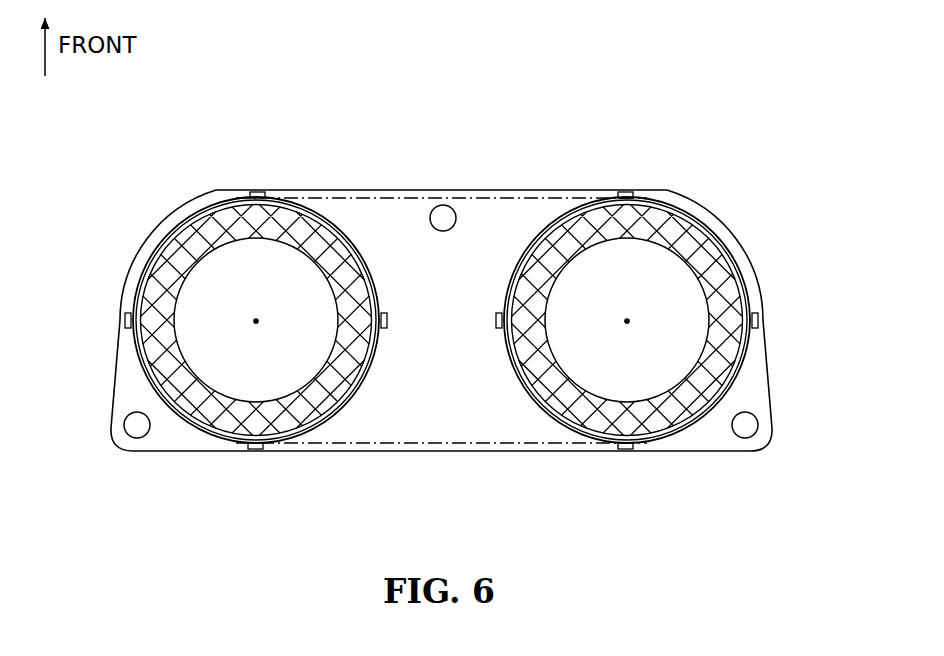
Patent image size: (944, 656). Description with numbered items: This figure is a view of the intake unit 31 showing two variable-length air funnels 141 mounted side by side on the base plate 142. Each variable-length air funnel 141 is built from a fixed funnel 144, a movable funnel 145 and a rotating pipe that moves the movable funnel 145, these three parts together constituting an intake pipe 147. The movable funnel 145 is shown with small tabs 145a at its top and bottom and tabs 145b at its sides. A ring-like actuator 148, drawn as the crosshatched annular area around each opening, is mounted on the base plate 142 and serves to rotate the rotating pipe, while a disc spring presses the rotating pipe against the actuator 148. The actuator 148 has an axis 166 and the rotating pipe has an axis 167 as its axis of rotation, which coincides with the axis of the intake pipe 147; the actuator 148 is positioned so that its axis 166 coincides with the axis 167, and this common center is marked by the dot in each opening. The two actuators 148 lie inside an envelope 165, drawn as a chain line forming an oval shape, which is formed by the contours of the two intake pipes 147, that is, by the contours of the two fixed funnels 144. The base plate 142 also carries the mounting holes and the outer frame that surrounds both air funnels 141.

The lens holder unit 31 is at (427, 130).
The variable-length air funnel 141 is at (227, 186).
The base plate 142 is at (355, 429).
The fixed funnel 144 is at (338, 227).
The movable funnel 145 is at (184, 289).
The upper/lower tabs of sleeve 145a is at (258, 192).
The side tabs of sleeve 145b is at (125, 320).
The intake pipe 147 is at (169, 223).
The actuator 148 is at (233, 424).
The envelope 165 is at (445, 444).
The axis of the actuator 166 is at (255, 324).
The axis of the rotating pipe 167 is at (626, 324).